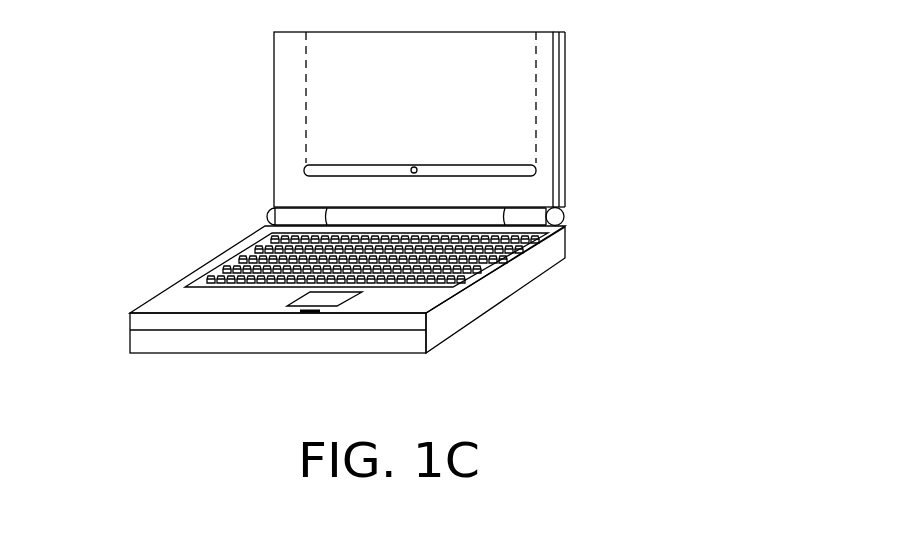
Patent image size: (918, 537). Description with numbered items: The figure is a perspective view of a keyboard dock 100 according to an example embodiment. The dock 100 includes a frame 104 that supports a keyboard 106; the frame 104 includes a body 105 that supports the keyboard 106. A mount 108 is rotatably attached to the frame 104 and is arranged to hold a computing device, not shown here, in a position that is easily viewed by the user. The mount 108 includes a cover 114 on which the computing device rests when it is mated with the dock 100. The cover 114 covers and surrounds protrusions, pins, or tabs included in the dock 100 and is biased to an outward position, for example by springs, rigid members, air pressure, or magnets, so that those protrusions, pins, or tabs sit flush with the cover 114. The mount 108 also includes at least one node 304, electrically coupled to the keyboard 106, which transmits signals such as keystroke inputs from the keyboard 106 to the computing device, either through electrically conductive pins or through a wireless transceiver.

The keyboard dock 100 is at (398, 192).
The frame 104 is at (165, 287).
The body 105 is at (212, 263).
The keyboard 106 is at (465, 266).
The mount 108 is at (565, 105).
The cover 114 is at (359, 120).
The node 304 is at (423, 118).